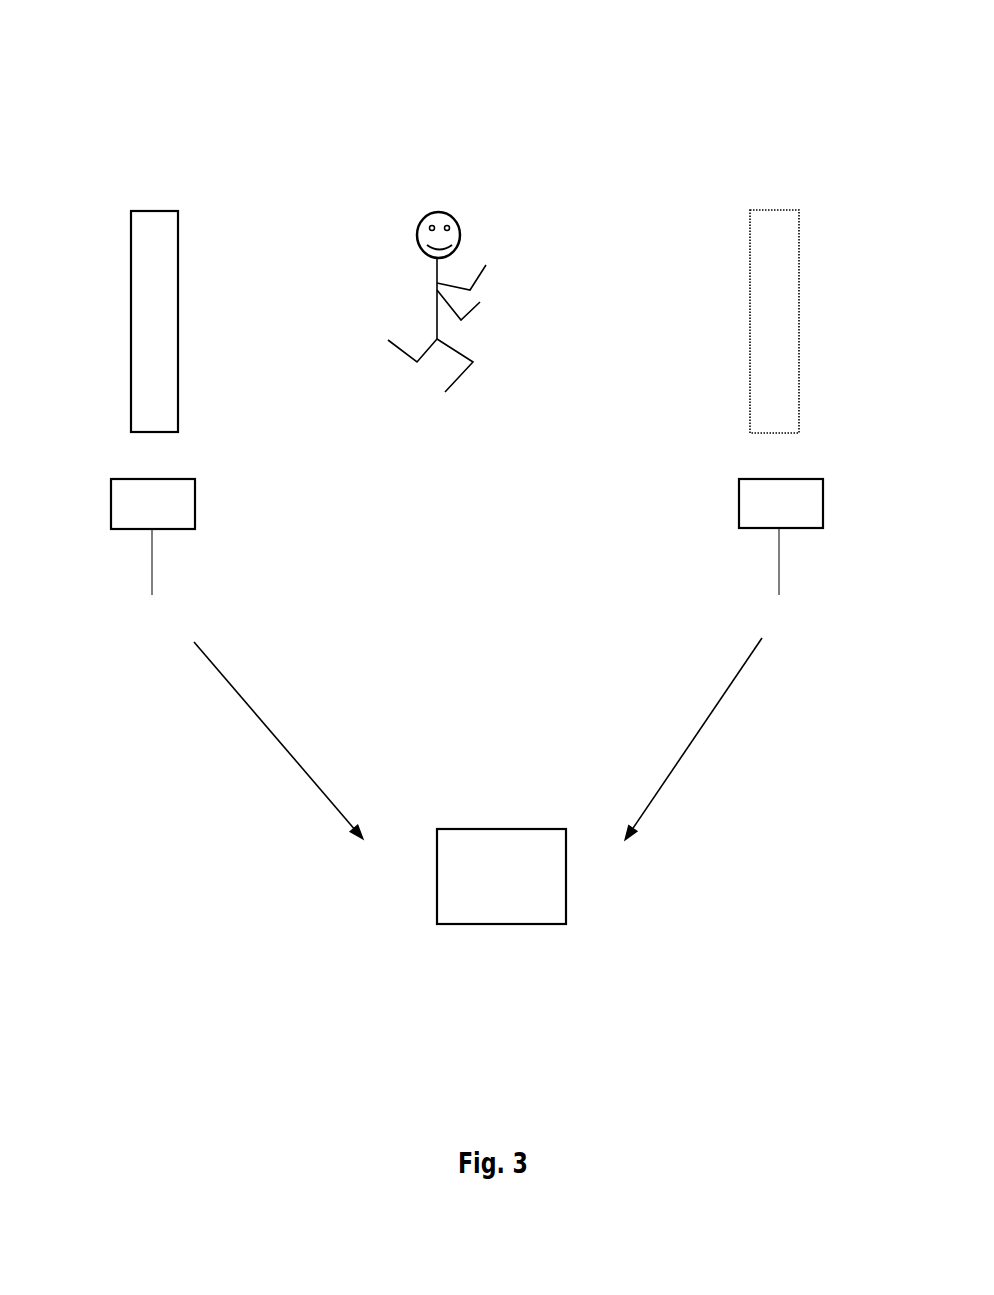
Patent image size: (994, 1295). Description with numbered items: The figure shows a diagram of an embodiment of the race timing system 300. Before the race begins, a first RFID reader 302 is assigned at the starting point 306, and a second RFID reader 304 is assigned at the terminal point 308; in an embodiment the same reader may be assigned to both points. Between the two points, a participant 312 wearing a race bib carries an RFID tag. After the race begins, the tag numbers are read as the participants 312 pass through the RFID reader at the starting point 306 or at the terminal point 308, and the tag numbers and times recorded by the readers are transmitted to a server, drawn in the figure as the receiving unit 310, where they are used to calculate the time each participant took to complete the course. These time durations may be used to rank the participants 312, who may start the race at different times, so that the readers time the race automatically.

The race timing system 300 is at (269, 94).
The first RFID reader 302 is at (118, 536).
The second RFID reader 304 is at (821, 536).
The starting point 306 is at (115, 301).
The terminal point 308 is at (813, 301).
The processing unit 310 is at (478, 786).
The participants 312 is at (437, 276).